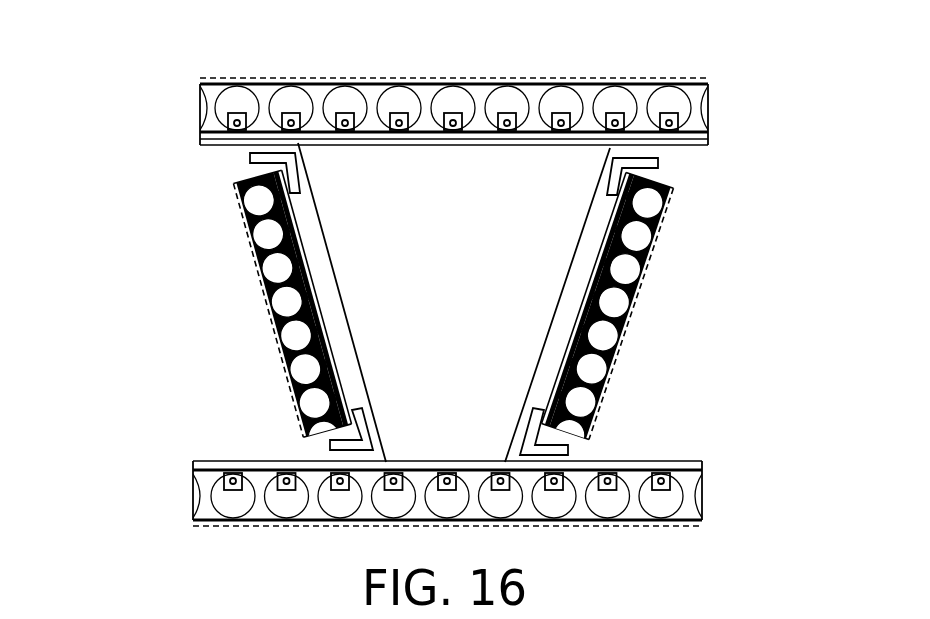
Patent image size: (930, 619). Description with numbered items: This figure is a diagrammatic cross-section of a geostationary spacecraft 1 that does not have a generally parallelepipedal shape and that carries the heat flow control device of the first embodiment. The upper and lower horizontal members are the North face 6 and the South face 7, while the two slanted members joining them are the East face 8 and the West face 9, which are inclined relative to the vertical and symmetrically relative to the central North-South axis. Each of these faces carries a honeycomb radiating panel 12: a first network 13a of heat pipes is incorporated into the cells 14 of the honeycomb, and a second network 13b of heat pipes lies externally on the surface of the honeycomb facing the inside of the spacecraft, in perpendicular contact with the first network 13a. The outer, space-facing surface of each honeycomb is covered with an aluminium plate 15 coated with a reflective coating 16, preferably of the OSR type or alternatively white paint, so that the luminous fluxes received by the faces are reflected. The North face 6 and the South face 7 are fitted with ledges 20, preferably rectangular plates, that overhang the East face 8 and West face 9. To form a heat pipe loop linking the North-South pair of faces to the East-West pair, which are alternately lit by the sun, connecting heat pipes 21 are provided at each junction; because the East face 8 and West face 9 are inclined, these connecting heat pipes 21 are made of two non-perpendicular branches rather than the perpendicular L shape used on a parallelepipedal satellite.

The spacecraft 1 is at (180, 89).
The North face 6 is at (470, 147).
The South face 7 is at (460, 460).
The East face 8 is at (542, 352).
The West face 9 is at (346, 310).
The honeycomb radiating panel 12 is at (451, 269).
The first network of heat pipes 13a is at (347, 122).
The second network of heat pipes 13b is at (200, 146).
The cells 14 is at (528, 87).
The aluminium plate 15 is at (452, 86).
The reflective coating 16 is at (282, 80).
The ledges 20 is at (228, 148).
The connecting heat pipes 21 is at (312, 180).